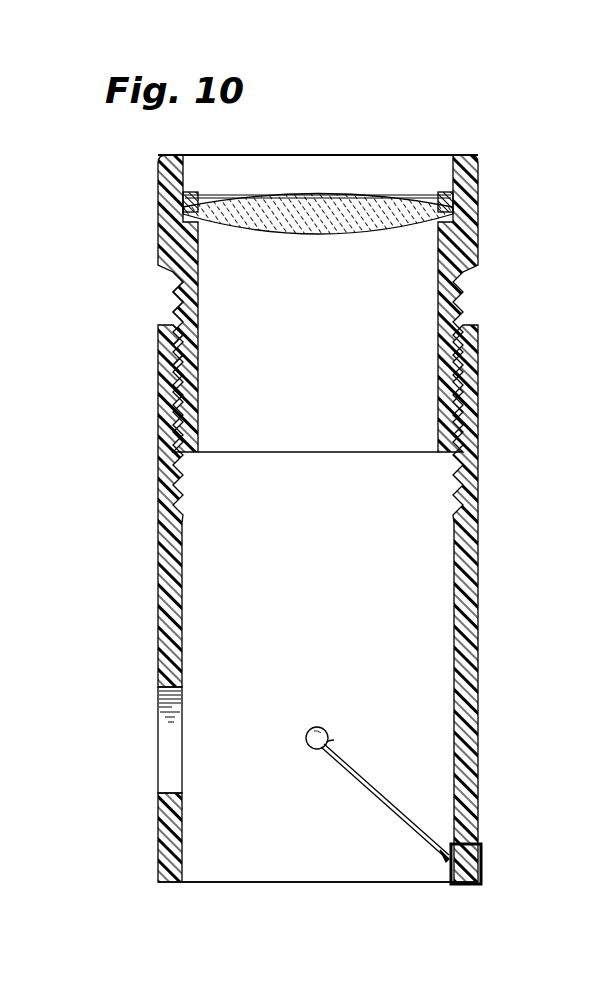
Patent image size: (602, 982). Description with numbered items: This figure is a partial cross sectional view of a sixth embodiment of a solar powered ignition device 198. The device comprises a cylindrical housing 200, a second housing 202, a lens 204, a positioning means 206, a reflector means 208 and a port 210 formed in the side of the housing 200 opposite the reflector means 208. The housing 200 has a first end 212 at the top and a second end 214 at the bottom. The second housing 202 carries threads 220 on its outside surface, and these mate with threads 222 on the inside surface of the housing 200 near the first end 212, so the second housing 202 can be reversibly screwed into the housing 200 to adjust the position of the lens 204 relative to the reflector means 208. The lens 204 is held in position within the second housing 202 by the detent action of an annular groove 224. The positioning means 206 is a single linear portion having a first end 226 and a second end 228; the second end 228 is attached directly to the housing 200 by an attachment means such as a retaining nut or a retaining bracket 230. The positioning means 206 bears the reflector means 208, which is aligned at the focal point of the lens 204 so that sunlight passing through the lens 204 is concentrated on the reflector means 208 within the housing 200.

The solar powered ignition device 198 is at (480, 463).
The cylindrical housing 200 is at (480, 650).
The second housing 202 is at (478, 200).
The lens 204 is at (395, 205).
The positioning means 206 is at (325, 755).
The reflector means 208 is at (310, 730).
The port 210 is at (165, 750).
The first end 212 is at (328, 155).
The second end 214 is at (437, 884).
The threads 220 is at (176, 300).
The threads 222 is at (180, 346).
The annular groove 224 is at (186, 215).
The first end 226 is at (330, 745).
The second end 228 is at (447, 858).
The retaining bracket 230 is at (483, 862).